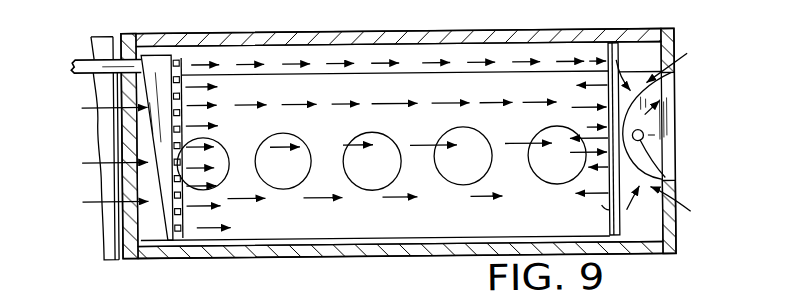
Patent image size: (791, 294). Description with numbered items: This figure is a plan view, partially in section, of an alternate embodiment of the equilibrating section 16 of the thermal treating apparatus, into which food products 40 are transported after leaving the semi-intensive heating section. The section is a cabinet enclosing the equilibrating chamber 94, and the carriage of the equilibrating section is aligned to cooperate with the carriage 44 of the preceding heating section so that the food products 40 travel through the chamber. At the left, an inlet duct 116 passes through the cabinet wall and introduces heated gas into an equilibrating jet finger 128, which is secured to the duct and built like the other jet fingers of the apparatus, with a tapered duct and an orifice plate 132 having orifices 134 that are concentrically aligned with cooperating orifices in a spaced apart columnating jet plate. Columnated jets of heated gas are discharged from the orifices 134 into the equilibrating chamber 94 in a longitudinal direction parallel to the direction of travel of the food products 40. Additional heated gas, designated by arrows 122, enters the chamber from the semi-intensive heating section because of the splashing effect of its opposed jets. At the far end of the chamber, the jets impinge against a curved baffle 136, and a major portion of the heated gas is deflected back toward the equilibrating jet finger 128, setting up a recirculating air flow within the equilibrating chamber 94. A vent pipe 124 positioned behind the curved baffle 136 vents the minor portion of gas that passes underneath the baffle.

The equilibrating section 16 is at (78, 45).
The inlet duct 116 is at (102, 62).
The equilibrating jet finger 128 is at (152, 70).
The arrows 122 is at (90, 160).
The orifices 134 is at (178, 208).
The orifice plate 132 is at (185, 216).
The carriage 44 is at (327, 243).
The food products 40 is at (287, 172).
The equilibrating chamber 94 is at (442, 218).
The curved baffle 136 is at (620, 55).
The vent pipe 124 is at (645, 143).